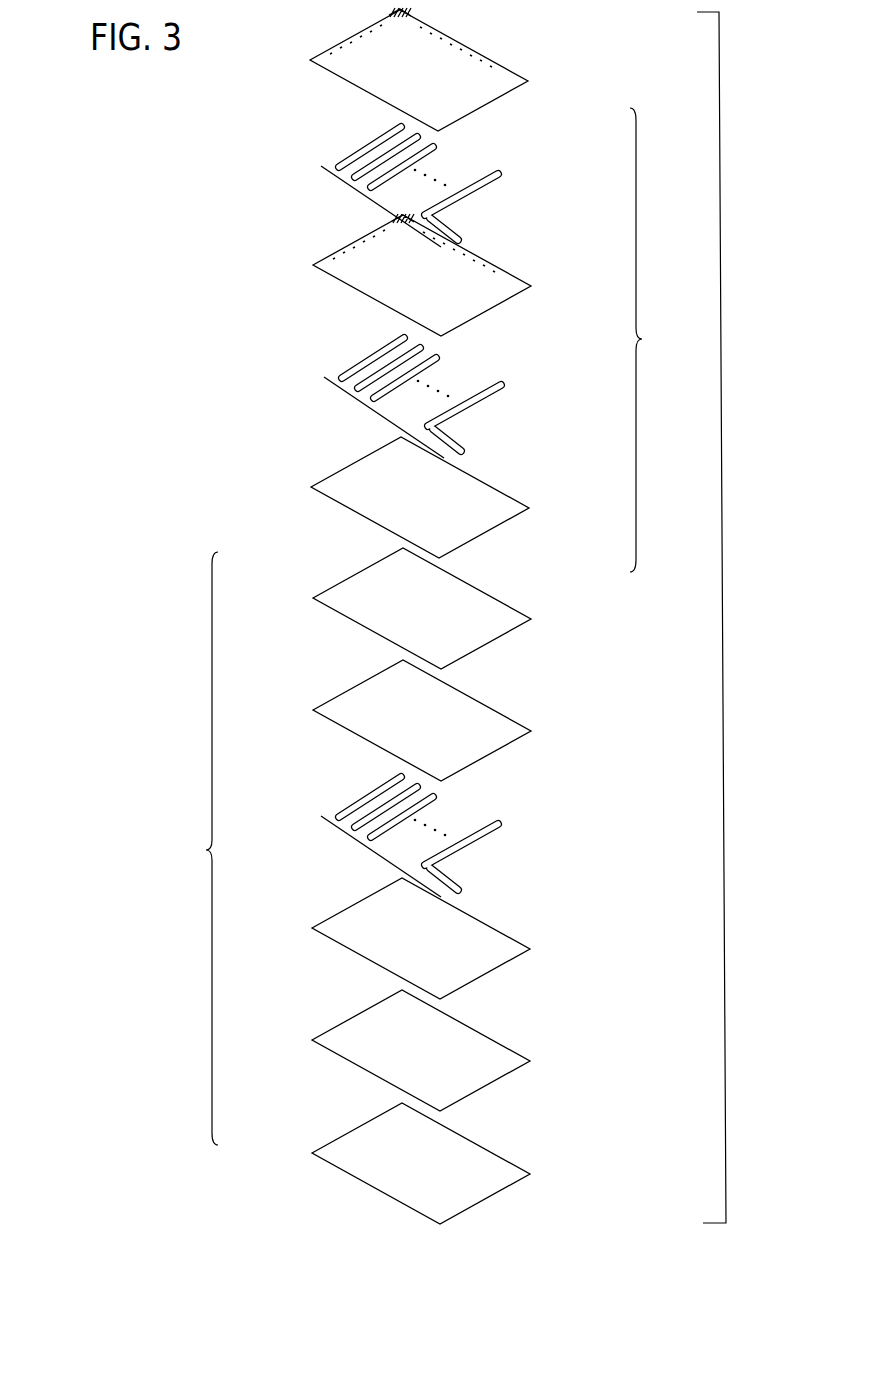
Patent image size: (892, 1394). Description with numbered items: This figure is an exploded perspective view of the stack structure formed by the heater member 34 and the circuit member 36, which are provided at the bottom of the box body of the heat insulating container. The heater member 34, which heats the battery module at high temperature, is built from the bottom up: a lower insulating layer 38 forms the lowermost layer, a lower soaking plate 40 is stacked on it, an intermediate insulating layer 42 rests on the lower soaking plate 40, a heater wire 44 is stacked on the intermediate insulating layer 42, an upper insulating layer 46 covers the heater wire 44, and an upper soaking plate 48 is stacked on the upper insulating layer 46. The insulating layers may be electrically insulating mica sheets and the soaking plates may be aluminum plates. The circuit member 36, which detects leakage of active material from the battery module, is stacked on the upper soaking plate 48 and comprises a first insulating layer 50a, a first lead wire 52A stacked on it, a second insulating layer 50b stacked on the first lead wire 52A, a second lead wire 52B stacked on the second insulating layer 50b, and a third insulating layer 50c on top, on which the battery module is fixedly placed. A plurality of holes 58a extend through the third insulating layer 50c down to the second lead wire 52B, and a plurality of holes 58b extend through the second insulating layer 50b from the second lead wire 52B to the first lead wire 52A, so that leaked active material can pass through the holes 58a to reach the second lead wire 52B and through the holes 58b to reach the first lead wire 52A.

The heater member 34 is at (198, 848).
The circuit member 36 is at (653, 340).
The lower insulating layer 38 is at (357, 1142).
The lower soaking plate 40 is at (357, 1030).
The intermediate insulating layer 42 is at (357, 917).
The heater wire 44 is at (331, 809).
The upper insulating layer 46 is at (358, 700).
The upper soaking plate 48 is at (358, 588).
The first insulating layer 50a is at (494, 516).
The second insulating layer 50b is at (494, 302).
The third insulating layer 50c is at (495, 95).
The first lead wire 52A is at (500, 397).
The second lead wire 52B is at (500, 187).
The holes 58a is at (408, 13).
The holes 58b is at (396, 221).